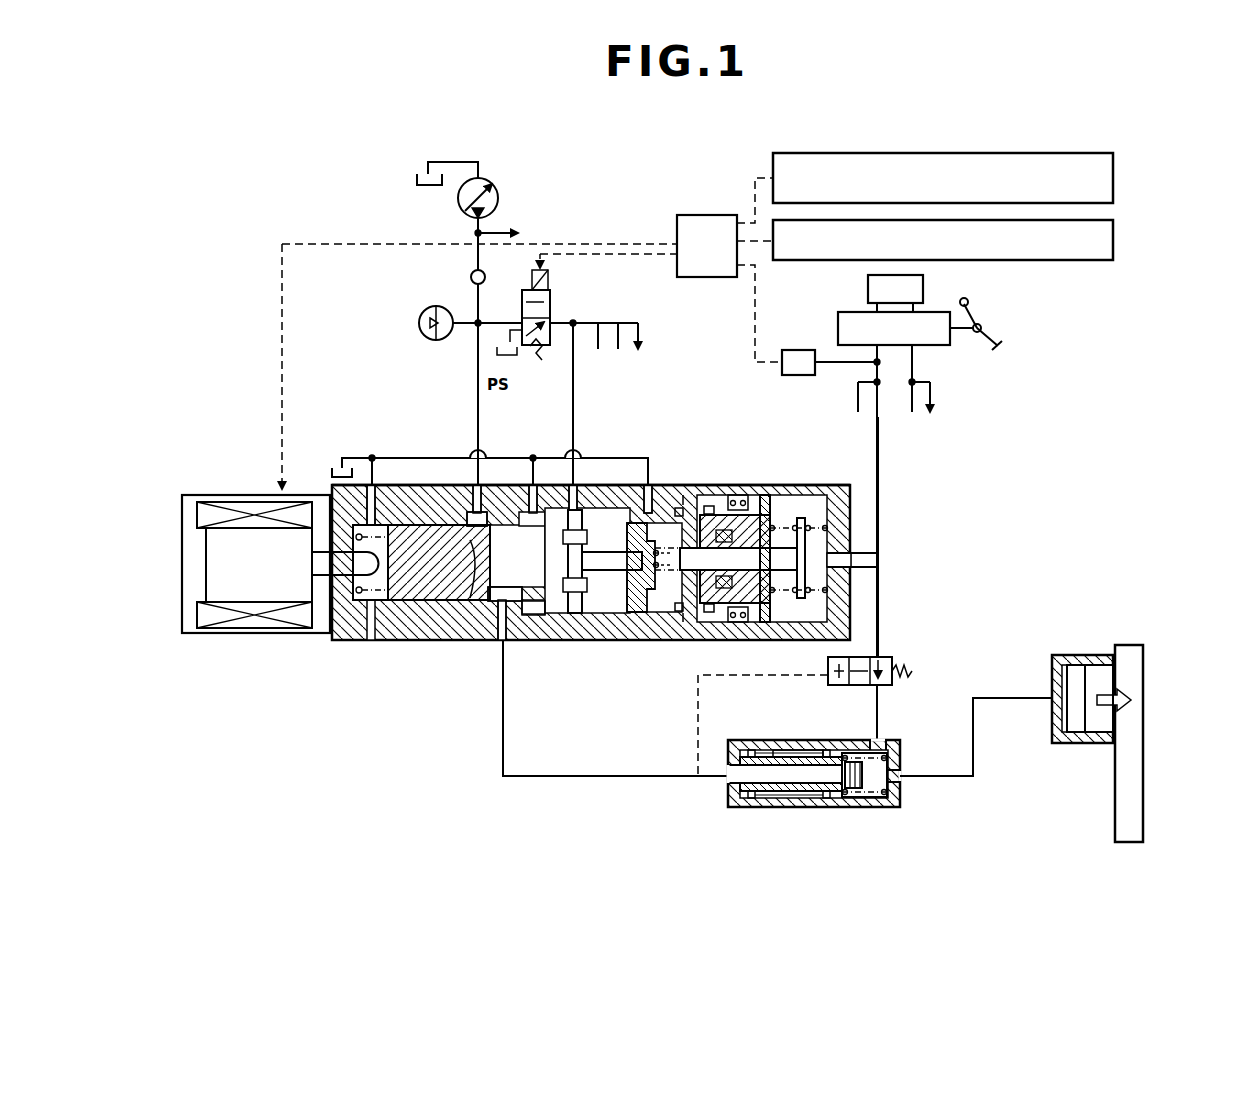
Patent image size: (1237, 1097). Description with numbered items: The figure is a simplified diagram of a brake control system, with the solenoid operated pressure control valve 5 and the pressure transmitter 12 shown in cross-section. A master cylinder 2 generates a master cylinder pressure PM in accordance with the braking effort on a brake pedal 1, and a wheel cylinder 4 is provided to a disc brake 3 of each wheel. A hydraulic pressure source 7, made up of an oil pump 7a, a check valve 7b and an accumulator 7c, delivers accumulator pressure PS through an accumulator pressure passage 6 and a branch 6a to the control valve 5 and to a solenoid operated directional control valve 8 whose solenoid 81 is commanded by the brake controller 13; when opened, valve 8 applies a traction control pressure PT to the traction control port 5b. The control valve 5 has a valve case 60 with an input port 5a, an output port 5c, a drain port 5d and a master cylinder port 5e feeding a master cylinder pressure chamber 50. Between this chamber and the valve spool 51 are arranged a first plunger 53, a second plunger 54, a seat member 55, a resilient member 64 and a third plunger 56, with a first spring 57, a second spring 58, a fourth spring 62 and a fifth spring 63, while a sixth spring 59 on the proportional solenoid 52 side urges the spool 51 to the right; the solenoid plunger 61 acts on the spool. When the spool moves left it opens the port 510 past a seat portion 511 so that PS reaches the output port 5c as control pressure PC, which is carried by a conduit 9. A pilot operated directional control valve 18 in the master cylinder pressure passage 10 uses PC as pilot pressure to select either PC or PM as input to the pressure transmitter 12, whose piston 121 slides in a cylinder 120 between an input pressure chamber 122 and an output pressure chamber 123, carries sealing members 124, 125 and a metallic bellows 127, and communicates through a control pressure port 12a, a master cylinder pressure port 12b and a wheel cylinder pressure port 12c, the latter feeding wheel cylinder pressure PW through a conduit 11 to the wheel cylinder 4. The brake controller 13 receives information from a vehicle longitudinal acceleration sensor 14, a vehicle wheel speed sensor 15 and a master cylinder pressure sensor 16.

The brake pedal 1 is at (1013, 330).
The master cylinder 2 is at (940, 312).
The disc brake 3 is at (1098, 650).
The wheel cylinder 4 is at (1076, 732).
The solenoid operated pressure control valve 5 is at (704, 468).
The input port 5a is at (476, 485).
The traction control port 5b is at (578, 485).
The output port 5c is at (506, 618).
The drain port 5d is at (373, 485).
The master cylinder port 5e is at (880, 570).
The accumulator pressure passage 6 is at (470, 365).
The branch conduit 6a is at (500, 323).
The hydraulic pressure source 7 is at (446, 295).
The oil pump 7a is at (498, 198).
The check valve 7b is at (471, 277).
The accumulator 7c is at (419, 319).
The solenoid operated directional control valve 8 is at (551, 312).
The solenoid 81 is at (548, 274).
The conduit 9 is at (503, 728).
The master cylinder pressure passage 10 is at (879, 506).
The conduit 11 is at (1012, 700).
The pressure transmitter 12 is at (787, 734).
The control pressure port 12a is at (728, 777).
The master cylinder pressure port 12b is at (880, 750).
The wheel cylinder pressure port 12c is at (900, 780).
The brake controller 13 is at (706, 215).
The vehicle longitudinal acceleration sensor 14 is at (1113, 170).
The vehicle wheel speed sensor 15 is at (1113, 237).
The master cylinder pressure sensor 16 is at (800, 350).
The pilot operated directional control valve 18 is at (889, 657).
The master cylinder pressure chamber 50 is at (822, 502).
The valve spool 51 is at (425, 610).
The proportional solenoid 52 is at (222, 493).
The first plunger 53 is at (715, 603).
The second plunger 54 is at (690, 575).
The seat member 55 is at (633, 620).
The third plunger 56 is at (575, 613).
The first spring 57 is at (765, 495).
The second spring 58 is at (800, 600).
The sixth spring 59 is at (360, 628).
The valve case 60 is at (683, 495).
The plunger 61 is at (248, 610).
The fourth spring 62 is at (738, 610).
The fifth spring 63 is at (666, 570).
The resilient member 64 is at (748, 500).
The cylinder 120 is at (748, 750).
The piston 121 is at (812, 797).
The input pressure chamber 122 is at (730, 793).
The output pressure chamber 123 is at (875, 790).
The sealing member 124 is at (752, 798).
The sealing member 125 is at (821, 750).
The metallic bellows 127 is at (853, 790).
The port 510 is at (472, 605).
The valve seat 511 is at (543, 620).